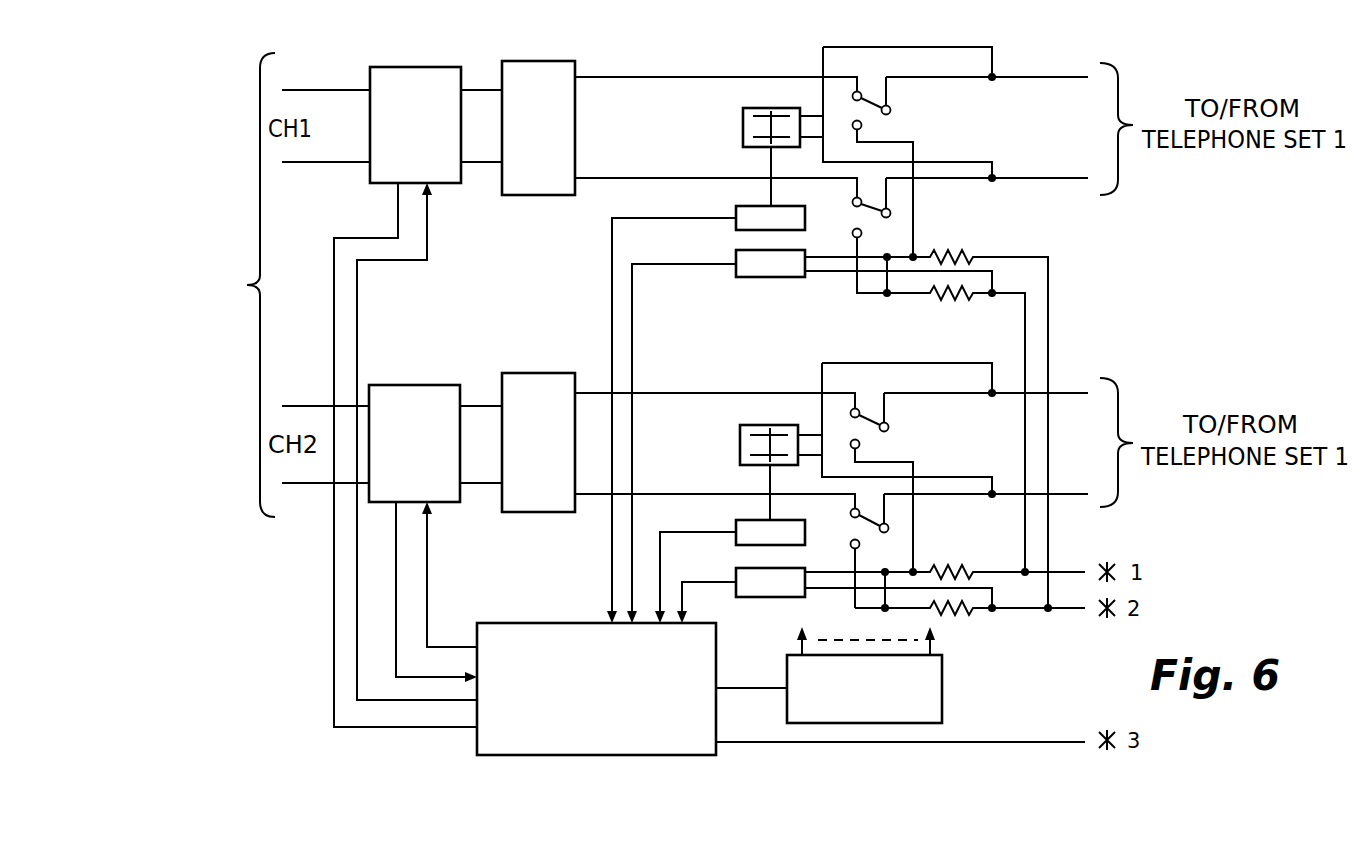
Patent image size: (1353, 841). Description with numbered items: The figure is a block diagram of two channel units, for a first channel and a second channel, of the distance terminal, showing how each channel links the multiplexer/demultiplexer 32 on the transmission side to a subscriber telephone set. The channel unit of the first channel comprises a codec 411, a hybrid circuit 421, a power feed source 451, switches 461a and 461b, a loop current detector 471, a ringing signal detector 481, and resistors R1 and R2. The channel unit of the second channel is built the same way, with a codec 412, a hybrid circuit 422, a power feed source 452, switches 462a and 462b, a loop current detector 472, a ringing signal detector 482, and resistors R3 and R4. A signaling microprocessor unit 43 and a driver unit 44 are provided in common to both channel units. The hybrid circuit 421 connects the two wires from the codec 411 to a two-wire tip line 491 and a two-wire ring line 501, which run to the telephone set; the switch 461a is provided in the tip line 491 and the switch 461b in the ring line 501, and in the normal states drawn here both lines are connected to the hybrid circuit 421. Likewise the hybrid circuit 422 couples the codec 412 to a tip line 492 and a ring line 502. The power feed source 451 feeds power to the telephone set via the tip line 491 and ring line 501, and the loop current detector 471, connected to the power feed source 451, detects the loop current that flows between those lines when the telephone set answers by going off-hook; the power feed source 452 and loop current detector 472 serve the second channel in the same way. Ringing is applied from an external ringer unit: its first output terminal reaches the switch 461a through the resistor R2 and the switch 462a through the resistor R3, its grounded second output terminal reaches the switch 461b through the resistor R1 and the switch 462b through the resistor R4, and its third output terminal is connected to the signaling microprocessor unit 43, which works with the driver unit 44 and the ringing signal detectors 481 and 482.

The multiplexer/demultiplexer 32 is at (161, 285).
The codec 411 is at (429, 67).
The codec 412 is at (416, 385).
The hybrid circuit 421 is at (533, 61).
The hybrid circuit 422 is at (562, 373).
The power feed source 451 is at (742, 118).
The power feed source 452 is at (740, 440).
The switch 461a is at (868, 116).
The switch 461b is at (870, 222).
The switch 462a is at (868, 434).
The switch 462b is at (870, 538).
The loop current detector 471 is at (740, 206).
The loop current detector 472 is at (745, 520).
The ringing signal detector 481 is at (775, 277).
The ringing signal detector 482 is at (770, 597).
The tip line 491 is at (1012, 77).
The ring line 501 is at (1012, 178).
The tip line 492 is at (1077, 382).
The ring line 502 is at (1077, 484).
The resistor R1 is at (982, 418).
The resistor R2 is at (958, 431).
The resistor R3 is at (999, 559).
The resistor R4 is at (970, 624).
The signaling microprocessor unit 43 is at (477, 738).
The driver unit 44 is at (945, 688).